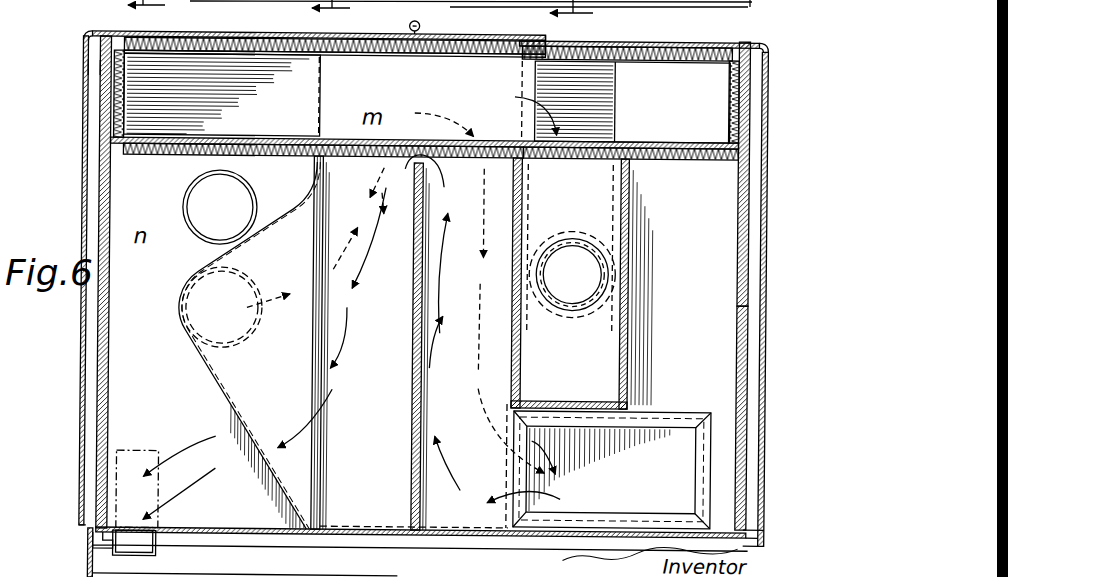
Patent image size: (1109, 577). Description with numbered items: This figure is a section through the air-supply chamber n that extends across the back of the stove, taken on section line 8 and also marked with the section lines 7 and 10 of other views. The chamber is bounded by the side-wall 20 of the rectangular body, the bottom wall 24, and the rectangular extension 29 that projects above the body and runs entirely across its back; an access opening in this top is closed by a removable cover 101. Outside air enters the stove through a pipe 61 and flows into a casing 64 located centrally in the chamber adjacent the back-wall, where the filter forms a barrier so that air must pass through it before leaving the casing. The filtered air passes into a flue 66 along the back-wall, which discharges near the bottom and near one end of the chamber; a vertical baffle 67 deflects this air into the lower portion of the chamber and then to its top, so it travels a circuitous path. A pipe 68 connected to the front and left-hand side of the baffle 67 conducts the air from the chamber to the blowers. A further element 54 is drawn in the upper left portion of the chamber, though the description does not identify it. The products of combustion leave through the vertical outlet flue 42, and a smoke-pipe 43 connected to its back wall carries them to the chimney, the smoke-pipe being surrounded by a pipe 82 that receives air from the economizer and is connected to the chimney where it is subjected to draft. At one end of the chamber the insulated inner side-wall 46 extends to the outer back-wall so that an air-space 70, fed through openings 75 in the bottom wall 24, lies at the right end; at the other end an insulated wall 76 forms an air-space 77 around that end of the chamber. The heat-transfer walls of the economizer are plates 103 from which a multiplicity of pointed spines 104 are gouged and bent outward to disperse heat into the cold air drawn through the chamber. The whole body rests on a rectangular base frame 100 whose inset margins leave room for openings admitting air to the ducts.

The section line 7— 7 is at (578, 12).
The section line 8— 8 is at (331, 13).
The section line 10— 10 is at (146, 13).
The side-wall 20 is at (81, 343).
The bottom wall 24 is at (372, 535).
The rectangular extension 29 is at (680, 40).
The vertical outlet flue 42 is at (600, 362).
The smoke-pipe 43 is at (590, 272).
The inner side-wall 46 is at (745, 410).
The upper roller 54 is at (194, 233).
The pipe 61 is at (192, 333).
The casing 64 is at (253, 342).
The flue 66 is at (612, 470).
The vertical baffle 67 is at (421, 390).
The pipe 68 is at (150, 554).
The space 70 is at (752, 222).
The openings 75 is at (750, 532).
The insulated wall 76 is at (103, 93).
The air-space 77 is at (93, 69).
The pipe 82 is at (574, 314).
The rectangular base frame 100 is at (91, 551).
The removable cover 101 is at (470, 35).
The plate 103 is at (655, 142).
The spines 104 is at (687, 157).